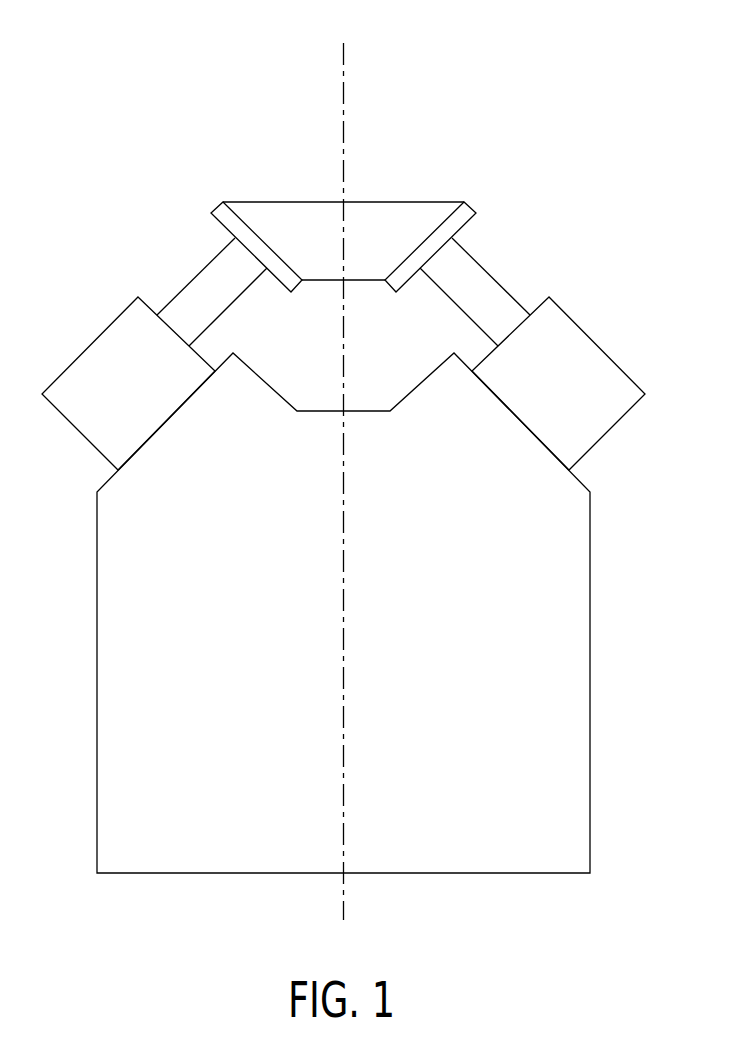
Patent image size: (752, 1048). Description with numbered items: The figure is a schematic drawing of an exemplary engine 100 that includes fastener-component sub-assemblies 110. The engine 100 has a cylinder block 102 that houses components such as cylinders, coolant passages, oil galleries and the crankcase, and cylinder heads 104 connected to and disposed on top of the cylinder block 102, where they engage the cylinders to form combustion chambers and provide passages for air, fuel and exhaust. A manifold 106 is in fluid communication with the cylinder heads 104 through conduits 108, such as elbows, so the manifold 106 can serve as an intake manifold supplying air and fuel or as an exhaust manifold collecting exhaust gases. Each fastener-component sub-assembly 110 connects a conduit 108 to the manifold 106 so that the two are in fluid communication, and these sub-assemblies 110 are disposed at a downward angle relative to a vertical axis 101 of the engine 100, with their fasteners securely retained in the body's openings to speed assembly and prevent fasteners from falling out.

The engine 100 is at (152, 115).
The vertical axis 101 is at (348, 80).
The cylinder block 102 is at (578, 692).
The cylinder head 104 is at (78, 398).
The manifold 106 is at (392, 217).
The conduit 108 is at (212, 278).
The fastener-component sub-assembly 110 is at (222, 211).